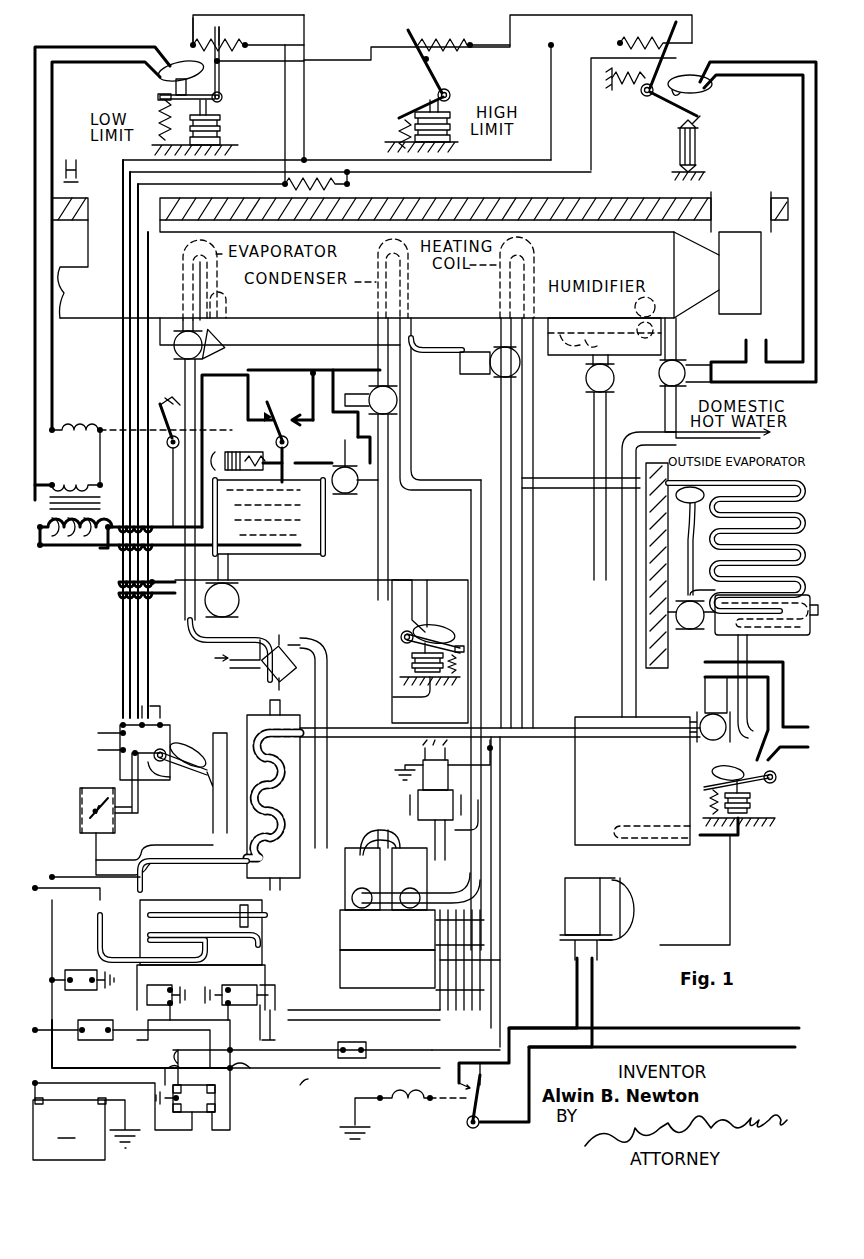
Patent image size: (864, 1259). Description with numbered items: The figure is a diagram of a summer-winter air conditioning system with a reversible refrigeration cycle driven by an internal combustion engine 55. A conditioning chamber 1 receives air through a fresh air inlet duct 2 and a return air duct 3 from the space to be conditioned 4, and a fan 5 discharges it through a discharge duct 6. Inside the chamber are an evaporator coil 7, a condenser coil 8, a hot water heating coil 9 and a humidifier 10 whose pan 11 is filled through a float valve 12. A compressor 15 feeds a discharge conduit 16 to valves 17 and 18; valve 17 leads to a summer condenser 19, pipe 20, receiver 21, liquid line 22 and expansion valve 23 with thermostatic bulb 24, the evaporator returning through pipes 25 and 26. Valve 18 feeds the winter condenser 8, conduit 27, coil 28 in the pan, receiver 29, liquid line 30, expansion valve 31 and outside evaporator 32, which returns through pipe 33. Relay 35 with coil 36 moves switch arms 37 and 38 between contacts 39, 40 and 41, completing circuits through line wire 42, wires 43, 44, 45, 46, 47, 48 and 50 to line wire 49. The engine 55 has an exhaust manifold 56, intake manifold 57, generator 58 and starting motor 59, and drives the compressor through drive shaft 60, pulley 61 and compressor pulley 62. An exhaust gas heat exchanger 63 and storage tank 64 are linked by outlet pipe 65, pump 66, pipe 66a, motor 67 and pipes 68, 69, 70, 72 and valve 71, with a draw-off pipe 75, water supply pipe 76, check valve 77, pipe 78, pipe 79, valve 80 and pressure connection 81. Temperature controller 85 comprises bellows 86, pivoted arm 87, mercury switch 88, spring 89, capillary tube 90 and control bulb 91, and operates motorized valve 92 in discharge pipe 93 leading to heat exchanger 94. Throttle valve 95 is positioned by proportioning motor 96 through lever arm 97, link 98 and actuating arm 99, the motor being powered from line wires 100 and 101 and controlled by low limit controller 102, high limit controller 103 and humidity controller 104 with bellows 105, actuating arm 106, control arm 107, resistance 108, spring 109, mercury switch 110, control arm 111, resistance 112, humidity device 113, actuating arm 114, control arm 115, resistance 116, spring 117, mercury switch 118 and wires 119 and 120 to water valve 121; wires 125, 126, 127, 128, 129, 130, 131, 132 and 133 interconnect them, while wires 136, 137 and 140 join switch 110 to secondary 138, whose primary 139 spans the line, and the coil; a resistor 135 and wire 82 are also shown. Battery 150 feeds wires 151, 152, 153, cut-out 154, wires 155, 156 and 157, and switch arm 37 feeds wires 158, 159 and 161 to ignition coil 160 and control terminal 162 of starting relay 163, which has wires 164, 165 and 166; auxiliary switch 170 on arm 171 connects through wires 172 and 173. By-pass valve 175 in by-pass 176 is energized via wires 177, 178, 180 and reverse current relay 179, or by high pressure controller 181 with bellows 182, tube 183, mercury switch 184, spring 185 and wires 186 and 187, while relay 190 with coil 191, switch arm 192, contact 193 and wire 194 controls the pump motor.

The conditioning chamber 1 is at (90, 320).
The fresh air inlet duct 2 is at (74, 258).
The return air duct 3 is at (86, 232).
The space to be conditioned 4 is at (71, 171).
The fan 5 is at (765, 298).
The discharge duct 6 is at (763, 224).
The evaporator coil 7 is at (182, 272).
The condenser coil 8 is at (371, 298).
The hot water heating coil 9 is at (494, 292).
The humidifier 10 is at (652, 352).
The humidifier pan 11 is at (672, 344).
The float valve 12 is at (618, 345).
The compressor 15 is at (350, 848).
The discharge conduit 16 is at (390, 686).
The valve 17 is at (356, 486).
The valve 18 is at (400, 398).
The summer condenser 19 is at (323, 520).
The pipe 20 is at (224, 575).
The receiver 21 is at (240, 600).
The liquid line 22 is at (183, 375).
The expansion valve 23 is at (176, 342).
The thermostatic bulb 24 is at (226, 302).
The pipe 25 is at (292, 340).
The pipe 26 is at (466, 529).
The conduit 27 is at (463, 332).
The coil 28 is at (578, 324).
The receiver 29 is at (586, 382).
The liquid line 30 is at (594, 557).
The expansion valve 31 is at (694, 642).
The outside evaporator 32 is at (798, 522).
The pipe 33 is at (582, 478).
The relay 35 is at (107, 406).
The relay coil 36 is at (76, 450).
The switch arm 37 is at (173, 394).
The switch arm 38 is at (282, 436).
The in contact 39 is at (163, 414).
The in contact 40 is at (466, 198).
The out contact 41 is at (301, 429).
The line wire 42 is at (42, 548).
The wire 43 is at (94, 540).
The wire 44 is at (248, 395).
The wire 45 is at (338, 370).
The wire 46 is at (339, 403).
The wire 47 is at (312, 384).
The wire 48 is at (294, 372).
The line wire 49 is at (110, 552).
The wire 50 is at (330, 428).
The internal combustion engine 55 is at (131, 921).
The exhaust manifold 56 is at (192, 895).
The intake manifold 57 is at (240, 936).
The direct current generator 58 is at (172, 984).
The starting motor 59 is at (247, 984).
The drive shaft 60 is at (342, 1012).
The pulley 61 is at (440, 1002).
The compressor pulley 62 is at (465, 946).
The exhaust gas heat exchanger 63 is at (244, 720).
The storage tank 64 is at (570, 800).
The outlet pipe 65 is at (654, 876).
The circulating pump 66 is at (640, 930).
The pipe 66a is at (533, 963).
The electric motor 67 is at (565, 880).
The pipe 68 is at (180, 857).
The pipe 69 is at (362, 724).
The pipe 70 is at (546, 670).
The valve 71 is at (494, 380).
The pipe 72 is at (524, 782).
The draw-off pipe 75 is at (624, 688).
The water supply pipe 76 is at (256, 660).
The check valve 77 is at (281, 662).
The pipe 78 is at (332, 788).
The pipe 79 is at (306, 606).
The valve 80 is at (266, 475).
The pressure connection 81 is at (312, 470).
The conductor 82 is at (472, 22).
The temperature controller 85 is at (768, 792).
The bellows 86 is at (772, 812).
The pivoted arm 87 is at (777, 778).
The mercury switch 88 is at (728, 770).
The spring 89 is at (704, 799).
The capillary tube 90 is at (723, 840).
The control bulb 91 is at (650, 822).
The motorized valve 92 is at (694, 696).
The discharge pipe 93 is at (750, 654).
The heat exchanger 94 is at (812, 648).
The throttle valve 95 is at (100, 799).
The proportioning motor 96 is at (185, 718).
The lever arm 97 is at (118, 816).
The link 98 is at (140, 793).
The actuating arm 99 is at (172, 777).
The line wire 100 is at (102, 727).
The line wire 101 is at (100, 751).
The low limit temperature controller 102 is at (122, 98).
The high limit temperature controller 103 is at (391, 100).
The humidity controller 104 is at (647, 133).
The bellows 105 is at (222, 118).
The actuating arm 106 is at (147, 99).
The control arm 107 is at (224, 80).
The control resistance 108 is at (247, 33).
The spring 109 is at (154, 120).
The mercury switch 110 is at (158, 80).
The control arm 111 is at (428, 75).
The resistance 112 is at (437, 38).
The humidity responsive device 113 is at (701, 144).
The actuating arm 114 is at (674, 108).
The control arm 115 is at (668, 54).
The resistance 116 is at (654, 29).
The spring 117 is at (636, 92).
The mercury switch 118 is at (706, 94).
The wire 119 is at (792, 80).
The wire 120 is at (790, 57).
The water valve 121 is at (684, 366).
The wire 125 is at (470, 168).
The wire 126 is at (285, 100).
The wire 127 is at (272, 160).
The wire 128 is at (299, 147).
The wire 129 is at (522, 159).
The wire 130 is at (532, 45).
The wire 131 is at (596, 42).
The wire 132 is at (692, 44).
The wire 133 is at (352, 57).
The resistor 135 is at (349, 184).
The wire 136 is at (52, 392).
The wire 137 is at (117, 51).
The secondary 138 is at (76, 481).
The primary 139 is at (116, 501).
The wire 140 is at (102, 472).
The storage battery 150 is at (86, 1129).
The wire 151 is at (42, 1090).
The wire 152 is at (75, 600).
The wire 153 is at (68, 1022).
The cut-out 154 is at (100, 1022).
The wire 155 is at (144, 1028).
The wire 156 is at (172, 1010).
The wire 157 is at (156, 516).
The wire 158 is at (178, 594).
The wire 159 is at (52, 961).
The ignition coil 160 is at (80, 970).
The wire 161 is at (128, 1068).
The control terminal 162 is at (164, 1064).
The starting relay 163 is at (212, 1092).
The wire 164 is at (182, 1130).
The wire 165 is at (233, 1112).
The wire 166 is at (215, 1053).
The auxiliary switch 170 is at (196, 748).
The arm 171 is at (211, 786).
The wire 172 is at (213, 818).
The wire 173 is at (228, 832).
The by-pass valve 175 is at (448, 820).
The by-pass 176 is at (464, 838).
The wire 177 is at (456, 750).
The wire 178 is at (445, 1040).
The reverse current relay 179 is at (358, 1030).
The wire 180 is at (285, 1046).
The high pressure controller 181 is at (390, 652).
The bellows 182 is at (412, 663).
The tube 183 is at (425, 696).
The mercury switch 184 is at (454, 626).
The spring 185 is at (461, 684).
The wire 186 is at (397, 580).
The wire 187 is at (448, 580).
The relay 190 is at (431, 1122).
The relay coil 191 is at (400, 1092).
The switch arm 192 is at (482, 1106).
The contact 193 is at (482, 1076).
The wire 194 is at (341, 1070).